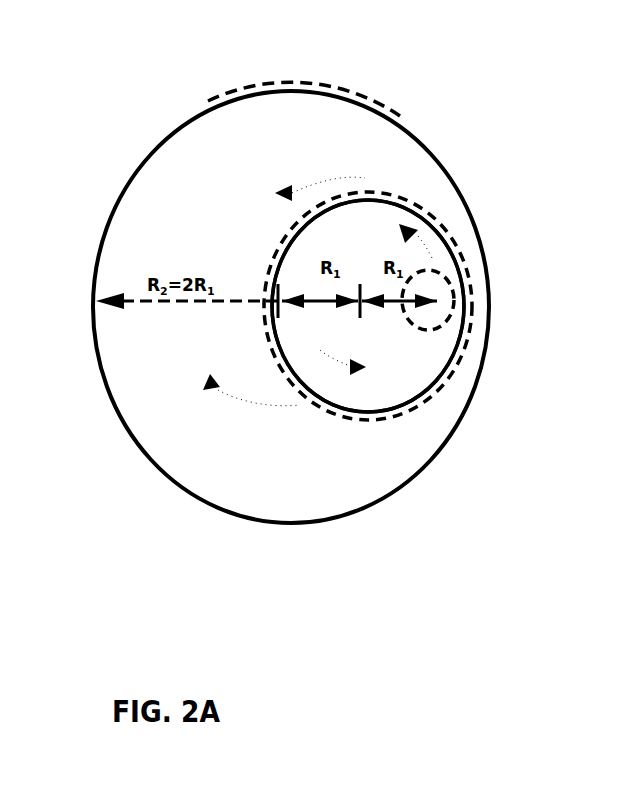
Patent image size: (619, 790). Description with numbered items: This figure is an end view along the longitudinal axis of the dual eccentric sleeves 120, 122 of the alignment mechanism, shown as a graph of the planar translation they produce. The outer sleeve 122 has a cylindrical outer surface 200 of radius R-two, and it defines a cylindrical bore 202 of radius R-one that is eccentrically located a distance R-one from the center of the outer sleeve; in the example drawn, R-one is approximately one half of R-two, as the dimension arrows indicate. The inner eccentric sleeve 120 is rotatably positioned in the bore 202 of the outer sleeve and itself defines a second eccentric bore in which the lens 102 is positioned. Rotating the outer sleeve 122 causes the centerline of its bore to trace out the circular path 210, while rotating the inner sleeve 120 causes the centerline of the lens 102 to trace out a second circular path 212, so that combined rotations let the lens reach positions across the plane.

The lens 102 is at (445, 298).
The inner eccentric sleeve 120 is at (413, 358).
The outer sleeve 122 is at (330, 485).
The cylindrical outer surface 200 is at (322, 89).
The cylindrical bore 202 is at (440, 210).
The circular path 210 is at (220, 205).
The second circular path 212 is at (360, 228).